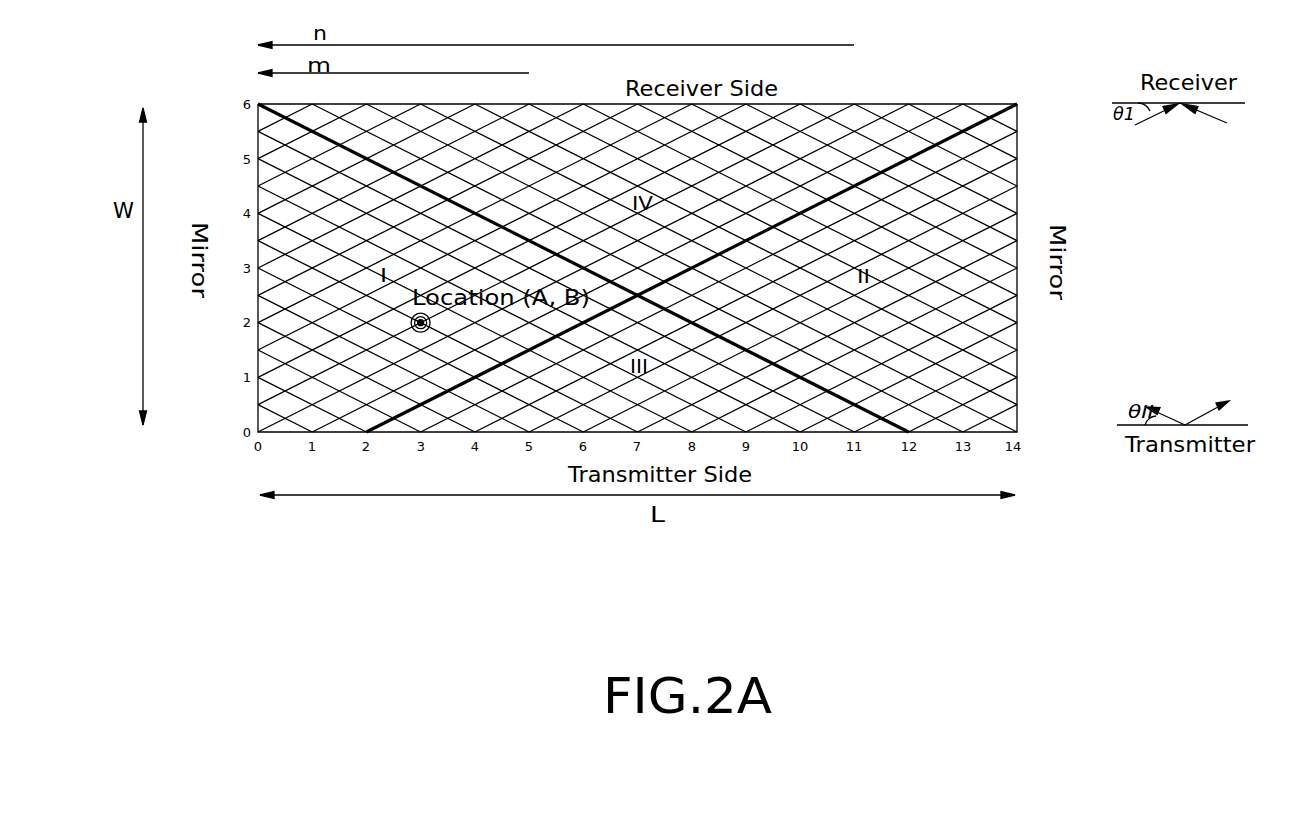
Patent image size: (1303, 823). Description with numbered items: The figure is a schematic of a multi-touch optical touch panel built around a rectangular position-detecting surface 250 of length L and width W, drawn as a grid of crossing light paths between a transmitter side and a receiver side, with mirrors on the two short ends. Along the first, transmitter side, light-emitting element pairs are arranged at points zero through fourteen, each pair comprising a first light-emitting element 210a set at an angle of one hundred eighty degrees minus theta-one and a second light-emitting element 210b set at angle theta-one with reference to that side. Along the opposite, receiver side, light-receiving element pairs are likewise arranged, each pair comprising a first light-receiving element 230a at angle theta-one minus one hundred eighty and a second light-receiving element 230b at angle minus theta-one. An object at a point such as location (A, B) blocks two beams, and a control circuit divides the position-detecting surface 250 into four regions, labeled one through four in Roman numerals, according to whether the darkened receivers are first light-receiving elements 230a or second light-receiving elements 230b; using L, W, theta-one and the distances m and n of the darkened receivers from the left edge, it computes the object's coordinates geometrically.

The rectangular position-detecting surface 250 is at (933, 103).
The first light-receiving element 230a is at (1136, 128).
The second light-receiving element 230b is at (1231, 121).
The first light-emitting element 210a is at (1143, 401).
The second light-emitting element 210b is at (1234, 403).